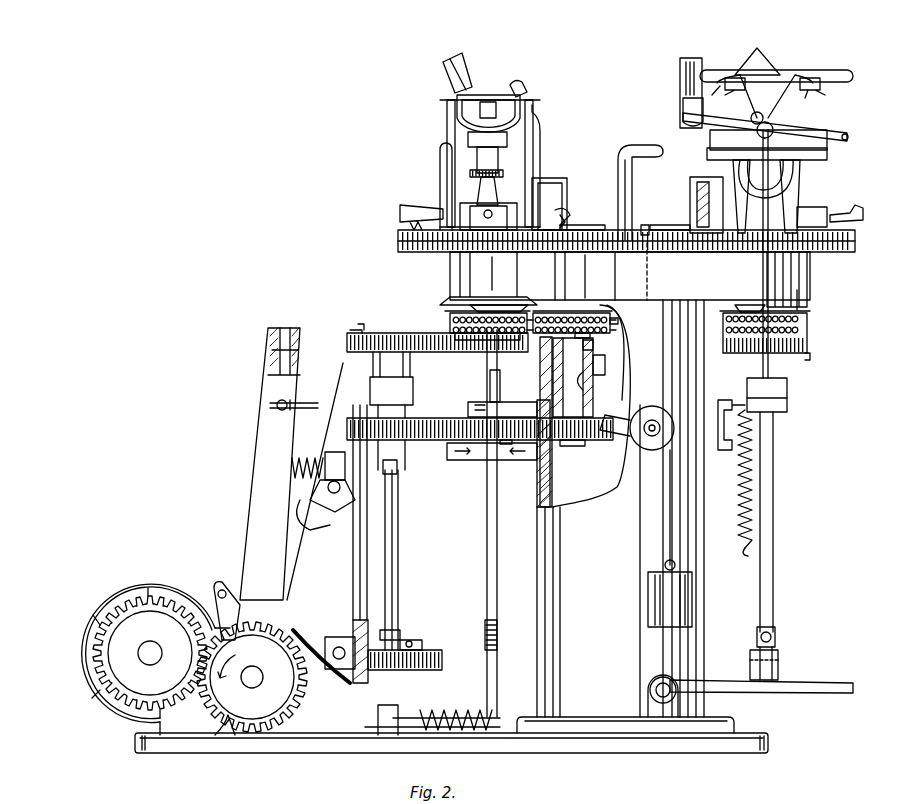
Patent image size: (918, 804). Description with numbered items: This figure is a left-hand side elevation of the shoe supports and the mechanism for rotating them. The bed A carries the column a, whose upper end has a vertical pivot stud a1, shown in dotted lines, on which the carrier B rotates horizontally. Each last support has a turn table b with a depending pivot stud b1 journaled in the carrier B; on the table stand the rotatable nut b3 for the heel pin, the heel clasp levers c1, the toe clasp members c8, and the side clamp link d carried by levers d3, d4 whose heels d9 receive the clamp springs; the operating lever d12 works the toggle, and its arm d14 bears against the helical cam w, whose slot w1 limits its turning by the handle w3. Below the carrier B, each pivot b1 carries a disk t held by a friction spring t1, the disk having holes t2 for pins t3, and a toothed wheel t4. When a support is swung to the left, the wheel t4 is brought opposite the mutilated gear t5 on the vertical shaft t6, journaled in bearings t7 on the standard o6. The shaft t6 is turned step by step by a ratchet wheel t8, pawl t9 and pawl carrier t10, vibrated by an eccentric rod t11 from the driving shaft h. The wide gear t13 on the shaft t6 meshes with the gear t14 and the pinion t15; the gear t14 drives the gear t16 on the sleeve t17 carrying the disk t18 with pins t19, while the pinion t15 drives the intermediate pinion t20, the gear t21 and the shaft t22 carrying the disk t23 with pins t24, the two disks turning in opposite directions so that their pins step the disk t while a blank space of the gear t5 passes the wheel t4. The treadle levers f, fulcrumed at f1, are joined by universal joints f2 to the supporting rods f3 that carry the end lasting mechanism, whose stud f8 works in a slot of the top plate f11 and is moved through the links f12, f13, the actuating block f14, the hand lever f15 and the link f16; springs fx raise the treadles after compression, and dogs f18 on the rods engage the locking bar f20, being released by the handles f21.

The bed A is at (620, 740).
The column a is at (625, 516).
The vertical pivot stud a1 is at (661, 271).
The carrier B is at (654, 276).
The movable base or turn table b is at (520, 297).
The depending pivot or journal stud b1 is at (490, 308).
The rotatable nut b3 is at (498, 165).
The heel clasp levers c1 is at (447, 124).
The toe clasp members c8 is at (490, 100).
The side clamp link d is at (515, 100).
The levers d3 is at (690, 192).
The levers d4 is at (440, 155).
The heels d9 is at (418, 205).
The operating lever d12 is at (560, 178).
The arm d14 is at (590, 225).
The helical surface cam w is at (579, 276).
The slot w1 is at (645, 225).
The handle w3 is at (642, 145).
The disks t is at (445, 327).
The friction springs t1 is at (445, 311).
The holes t2 is at (445, 318).
The pins t3 is at (540, 311).
The toothed wheels t4 is at (808, 358).
The gear wheel t5 is at (372, 333).
The vertical shaft t6 is at (397, 493).
The bearings t7 is at (413, 390).
The ratchet wheel t8 is at (440, 655).
The pawl t9 is at (410, 670).
The pawl carrier t10 is at (420, 642).
The eccentric rod t11 is at (383, 642).
The wide gear t13 is at (430, 418).
The gear t14 is at (500, 418).
The pinion t15 is at (447, 460).
The gear t16 is at (593, 412).
The sleeve t17 is at (585, 385).
The disk t18 is at (575, 335).
The pins t19 is at (552, 345).
The intermediate pinion t20 is at (507, 445).
The gear t21 is at (580, 446).
The shaft t22 is at (615, 360).
The disk t23 is at (585, 298).
The pins t24 is at (618, 320).
The standard o6 is at (360, 543).
The driving shaft h is at (218, 531).
The treadle levers f is at (800, 683).
The fulcrum f1 is at (648, 688).
The universal joints f2 is at (775, 637).
The supporting rods f3 is at (773, 488).
The springs fx is at (752, 452).
The stud f8 is at (757, 75).
The top plates f11 is at (720, 150).
The links f12 is at (728, 78).
The links f13 is at (790, 105).
The actuating block f14 is at (720, 135).
The hand lever f15 is at (840, 135).
The link f16 is at (835, 70).
The dogs f18 is at (787, 386).
The locking bar f20 is at (787, 402).
The handles f21 is at (807, 270).